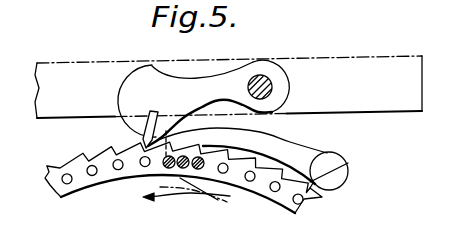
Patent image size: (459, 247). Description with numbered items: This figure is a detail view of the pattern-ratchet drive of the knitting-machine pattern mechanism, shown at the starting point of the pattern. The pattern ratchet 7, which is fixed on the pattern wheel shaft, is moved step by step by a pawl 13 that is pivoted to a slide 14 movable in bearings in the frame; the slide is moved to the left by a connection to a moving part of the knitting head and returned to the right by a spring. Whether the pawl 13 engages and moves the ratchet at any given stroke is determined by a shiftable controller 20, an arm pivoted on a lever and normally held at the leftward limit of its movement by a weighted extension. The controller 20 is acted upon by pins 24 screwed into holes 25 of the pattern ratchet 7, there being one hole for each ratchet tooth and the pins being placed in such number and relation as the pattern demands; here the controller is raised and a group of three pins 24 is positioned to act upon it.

The pattern ratchet 7 is at (56, 162).
The pawl 13 is at (203, 104).
The slide 14 is at (228, 87).
The shiftable controller 20 is at (290, 144).
The pins 24 is at (178, 168).
The holes 25 is at (276, 192).